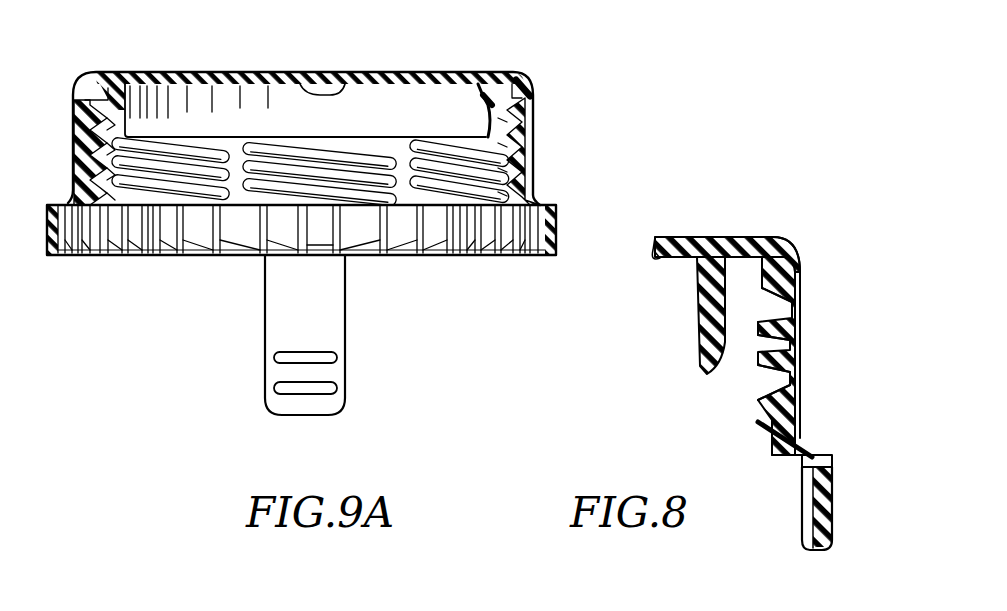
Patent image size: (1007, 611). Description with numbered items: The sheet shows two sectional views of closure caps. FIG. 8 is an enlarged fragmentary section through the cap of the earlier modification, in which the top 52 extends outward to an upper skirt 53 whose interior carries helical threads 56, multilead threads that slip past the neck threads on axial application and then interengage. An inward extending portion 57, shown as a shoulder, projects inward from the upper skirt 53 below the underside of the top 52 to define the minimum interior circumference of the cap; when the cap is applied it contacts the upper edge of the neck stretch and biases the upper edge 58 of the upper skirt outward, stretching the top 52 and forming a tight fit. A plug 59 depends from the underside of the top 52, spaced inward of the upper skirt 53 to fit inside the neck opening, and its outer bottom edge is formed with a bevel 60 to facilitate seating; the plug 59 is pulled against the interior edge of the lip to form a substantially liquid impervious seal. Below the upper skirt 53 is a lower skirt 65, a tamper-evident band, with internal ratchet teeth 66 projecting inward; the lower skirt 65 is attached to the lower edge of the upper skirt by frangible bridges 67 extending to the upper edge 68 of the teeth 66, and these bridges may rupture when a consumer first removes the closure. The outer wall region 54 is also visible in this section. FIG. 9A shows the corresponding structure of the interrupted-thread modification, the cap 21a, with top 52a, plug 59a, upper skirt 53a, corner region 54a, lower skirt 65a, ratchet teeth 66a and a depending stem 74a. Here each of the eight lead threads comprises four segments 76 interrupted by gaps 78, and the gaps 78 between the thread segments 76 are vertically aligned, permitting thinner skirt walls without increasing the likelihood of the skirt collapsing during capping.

In FIG. 9A, the cap 21a is at (93, 68).
In FIG. 9A, the top 52a is at (337, 73).
In FIG. 9A, the plug 59a is at (482, 130).
In FIG. 9A, the thread segments 76 is at (183, 175).
In FIG. 9A, the gaps 78 is at (238, 155).
In FIG. 9A, the upper skirt edge region 54a is at (528, 95).
In FIG. 9A, the upper skirt 53a is at (530, 135).
In FIG. 9A, the lower skirt 65a is at (555, 225).
In FIG. 9A, the ratchet teeth 66a is at (480, 238).
In FIG. 9A, the stem 74a is at (278, 332).
In FIG. 8, the top 52 is at (668, 237).
In FIG. 8, the inward extending portion 57 is at (780, 262).
In FIG. 8, the upper edge 58 is at (784, 300).
In FIG. 8, the upper skirt 53 is at (790, 333).
In FIG. 8, the outer wall 54 is at (801, 348).
In FIG. 8, the plug 59 is at (706, 290).
In FIG. 8, the bevel 60 is at (727, 355).
In FIG. 8, the threads 56 is at (762, 398).
In FIG. 8, the frangible bridges 67 is at (820, 460).
In FIG. 8, the upper edge of the teeth 68 is at (833, 462).
In FIG. 8, the lower skirt 65 is at (833, 522).
In FIG. 8, the ratchet teeth 66 is at (812, 520).